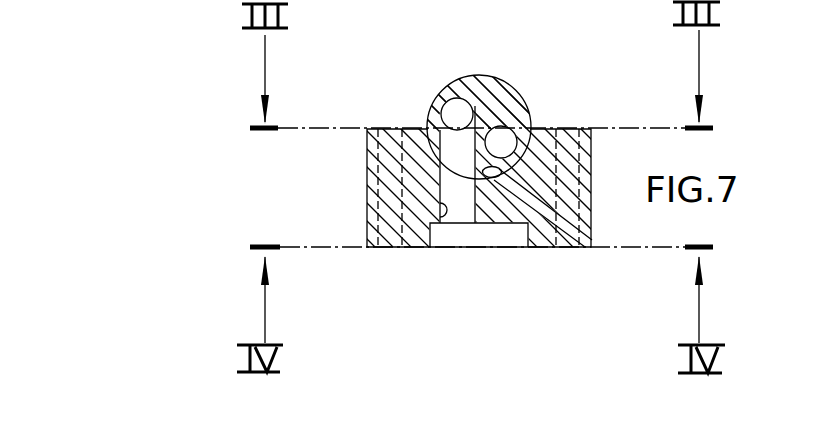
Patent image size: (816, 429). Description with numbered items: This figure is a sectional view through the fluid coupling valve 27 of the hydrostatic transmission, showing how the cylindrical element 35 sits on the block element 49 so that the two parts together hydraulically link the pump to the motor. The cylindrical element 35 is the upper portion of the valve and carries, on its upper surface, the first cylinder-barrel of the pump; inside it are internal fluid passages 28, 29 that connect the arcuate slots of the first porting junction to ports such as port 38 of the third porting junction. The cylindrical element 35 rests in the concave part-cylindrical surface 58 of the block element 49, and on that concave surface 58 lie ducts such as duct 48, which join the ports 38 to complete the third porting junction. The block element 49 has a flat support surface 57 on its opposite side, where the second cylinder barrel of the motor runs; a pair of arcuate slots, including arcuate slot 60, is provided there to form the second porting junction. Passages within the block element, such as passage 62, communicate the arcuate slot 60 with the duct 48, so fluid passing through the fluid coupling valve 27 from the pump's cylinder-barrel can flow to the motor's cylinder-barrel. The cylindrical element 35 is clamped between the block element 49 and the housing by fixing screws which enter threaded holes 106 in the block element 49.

The fluid coupling valve 27 is at (243, 187).
The internal fluid passage 28 is at (521, 128).
The internal fluid passage 29 is at (453, 110).
The cylindrical element 35 is at (495, 90).
The port 38 is at (455, 157).
The duct 48 is at (445, 208).
The block element 49 is at (377, 226).
The flat support surface 57 is at (545, 247).
The concave part-cylindrical surface 58 is at (503, 142).
The arcuate-slot 60 is at (467, 233).
The passage 62 is at (453, 193).
The threaded hole 106 is at (591, 128).